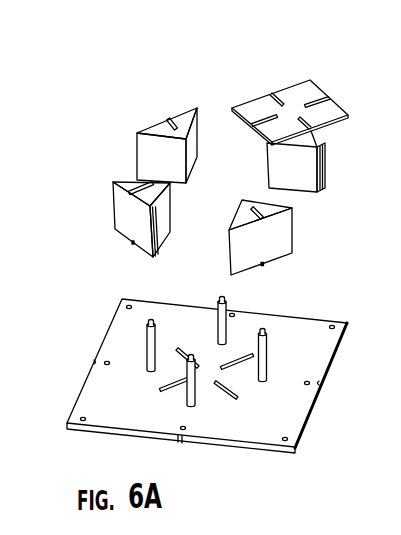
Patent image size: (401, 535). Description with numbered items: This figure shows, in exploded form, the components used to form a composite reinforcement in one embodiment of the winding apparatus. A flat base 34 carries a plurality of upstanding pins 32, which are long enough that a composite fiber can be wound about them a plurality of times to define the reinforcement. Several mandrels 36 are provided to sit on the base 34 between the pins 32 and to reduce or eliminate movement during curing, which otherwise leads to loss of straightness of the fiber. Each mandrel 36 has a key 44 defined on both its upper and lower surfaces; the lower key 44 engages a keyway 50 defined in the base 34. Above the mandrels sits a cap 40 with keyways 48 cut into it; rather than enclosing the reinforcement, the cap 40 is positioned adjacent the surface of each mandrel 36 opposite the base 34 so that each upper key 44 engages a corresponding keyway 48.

The pins 32 is at (268, 350).
The base 34 is at (318, 395).
The mandrels 36 is at (157, 128).
The cap 40 is at (343, 105).
The key 44 is at (258, 214).
The keyway 48 is at (273, 95).
The keyway 50 is at (233, 397).